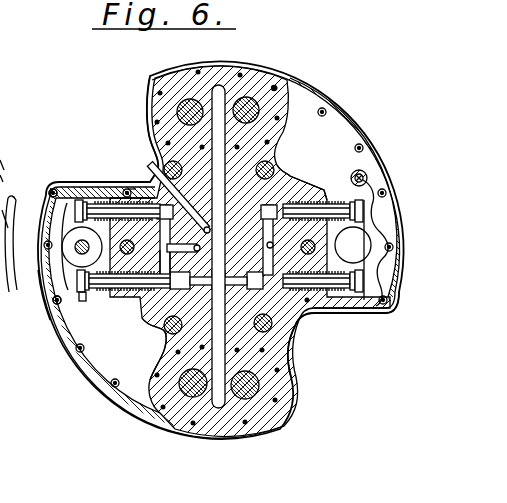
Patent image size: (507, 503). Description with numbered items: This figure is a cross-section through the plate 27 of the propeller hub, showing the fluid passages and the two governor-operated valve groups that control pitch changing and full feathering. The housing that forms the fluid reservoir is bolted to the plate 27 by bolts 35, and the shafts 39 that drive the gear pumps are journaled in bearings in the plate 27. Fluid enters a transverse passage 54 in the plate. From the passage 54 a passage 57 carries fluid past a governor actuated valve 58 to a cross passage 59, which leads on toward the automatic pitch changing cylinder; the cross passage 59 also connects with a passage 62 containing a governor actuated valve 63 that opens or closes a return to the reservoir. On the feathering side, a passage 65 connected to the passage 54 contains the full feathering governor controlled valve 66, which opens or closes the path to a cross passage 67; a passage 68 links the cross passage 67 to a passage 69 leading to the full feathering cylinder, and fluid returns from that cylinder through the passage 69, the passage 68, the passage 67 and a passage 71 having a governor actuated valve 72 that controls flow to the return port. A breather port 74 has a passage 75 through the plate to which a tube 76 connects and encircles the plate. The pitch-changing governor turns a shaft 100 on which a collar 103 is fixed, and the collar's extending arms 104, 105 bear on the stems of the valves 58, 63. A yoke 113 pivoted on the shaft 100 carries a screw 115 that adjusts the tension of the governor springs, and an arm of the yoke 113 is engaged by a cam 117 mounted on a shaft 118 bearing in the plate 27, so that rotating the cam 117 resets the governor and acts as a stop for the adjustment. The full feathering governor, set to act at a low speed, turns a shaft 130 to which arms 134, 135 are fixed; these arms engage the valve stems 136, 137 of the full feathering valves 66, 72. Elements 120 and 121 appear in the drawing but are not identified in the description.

The plate 27 is at (268, 76).
The bolts 35 is at (383, 304).
The shafts 39 is at (181, 100).
The transverse passage 54 is at (223, 93).
The passage 57 is at (289, 324).
The governor actuated valve 58 is at (315, 291).
The cross passage 59 is at (267, 259).
The passage 62 is at (281, 186).
The governor actuated valve 63 is at (336, 204).
The passage 65 is at (167, 336).
The full feathering governor controlled valve 66 is at (156, 331).
The cross passage 67 is at (161, 261).
The passage 68 is at (181, 244).
The passage 69 is at (197, 251).
The passage 71 is at (129, 188).
The governor actuated valve 72 is at (114, 190).
The breather port 74 is at (210, 230).
The passage 75 is at (157, 167).
The tube 76 is at (148, 118).
The shaft 100 is at (48, 285).
The collar 103 is at (364, 240).
The arm 104 is at (363, 304).
The arm 105 is at (372, 183).
The yoke 113 is at (8, 228).
The screw 115 is at (5, 167).
The cam 117 is at (11, 154).
The shaft 118 is at (353, 172).
The left lever pivot 120 is at (3, 193).
The left lever 121 is at (6, 215).
The shaft 130 is at (40, 301).
The arm 134 is at (56, 322).
The arm 135 is at (70, 190).
The valve stem 136 is at (82, 301).
The valve stem 137 is at (88, 182).